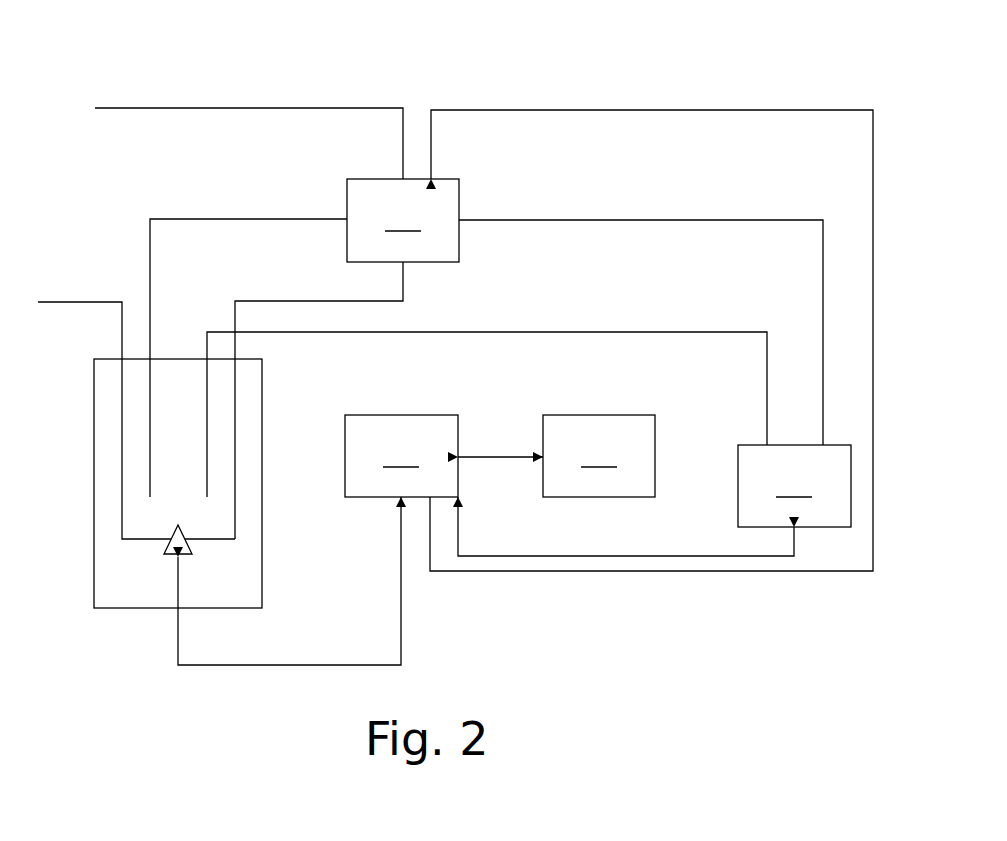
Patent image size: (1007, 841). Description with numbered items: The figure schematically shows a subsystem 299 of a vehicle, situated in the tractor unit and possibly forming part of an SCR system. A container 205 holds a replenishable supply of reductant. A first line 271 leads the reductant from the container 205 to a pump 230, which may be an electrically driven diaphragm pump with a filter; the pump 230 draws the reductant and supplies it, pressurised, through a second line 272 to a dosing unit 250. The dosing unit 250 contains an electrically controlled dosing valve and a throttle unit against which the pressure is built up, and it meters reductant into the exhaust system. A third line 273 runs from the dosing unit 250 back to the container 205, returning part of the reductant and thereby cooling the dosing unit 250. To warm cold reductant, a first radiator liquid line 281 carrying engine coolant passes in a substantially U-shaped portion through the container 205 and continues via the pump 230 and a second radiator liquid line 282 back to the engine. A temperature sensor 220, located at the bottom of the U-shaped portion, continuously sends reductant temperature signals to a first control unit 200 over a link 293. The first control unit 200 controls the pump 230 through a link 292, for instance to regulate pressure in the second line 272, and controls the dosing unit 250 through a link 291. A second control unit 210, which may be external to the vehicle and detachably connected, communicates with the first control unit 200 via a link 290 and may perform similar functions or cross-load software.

The first control unit 200 is at (401, 456).
The container 205 is at (120, 609).
The second control unit 210 is at (599, 456).
The temperature sensor 220 is at (170, 555).
The pump 230 is at (347, 359).
The dosing unit 250 is at (794, 486).
The first line 271 is at (208, 219).
The second line 272 is at (590, 220).
The third line 273 is at (743, 332).
The first radiator liquid line 281 is at (97, 300).
The second radiator liquid line 282 is at (212, 108).
The link 290 is at (494, 455).
The link 291 is at (660, 556).
The link 292 is at (680, 572).
The link 293 is at (401, 637).
The subsystem 299 is at (573, 70).